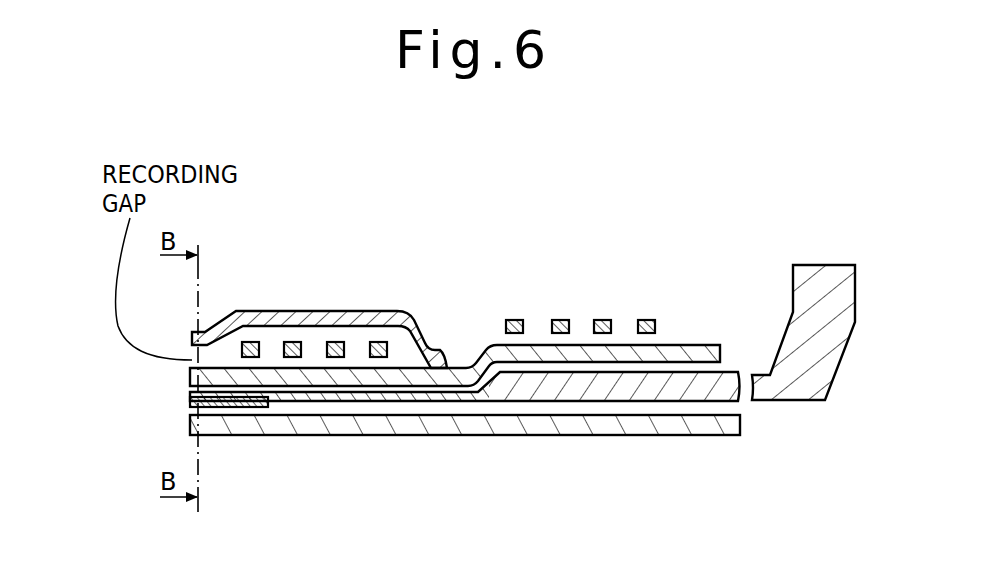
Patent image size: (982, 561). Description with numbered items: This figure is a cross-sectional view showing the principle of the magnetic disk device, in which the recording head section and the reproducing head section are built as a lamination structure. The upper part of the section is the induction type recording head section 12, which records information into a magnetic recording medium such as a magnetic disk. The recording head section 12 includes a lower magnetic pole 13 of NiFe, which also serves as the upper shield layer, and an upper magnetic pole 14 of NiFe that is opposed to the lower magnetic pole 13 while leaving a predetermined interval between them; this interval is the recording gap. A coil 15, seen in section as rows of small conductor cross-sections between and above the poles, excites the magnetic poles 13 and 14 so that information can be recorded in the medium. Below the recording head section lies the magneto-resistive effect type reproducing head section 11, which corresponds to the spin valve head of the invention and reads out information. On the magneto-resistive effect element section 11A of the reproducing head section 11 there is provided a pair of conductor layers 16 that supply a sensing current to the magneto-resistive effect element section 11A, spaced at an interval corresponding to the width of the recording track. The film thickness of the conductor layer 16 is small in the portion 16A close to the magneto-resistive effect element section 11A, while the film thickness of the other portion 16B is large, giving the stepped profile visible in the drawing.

The reproducing head section 11 is at (178, 407).
The magneto-resistive effect element section 11A is at (268, 408).
The recording head section 12 is at (180, 336).
The lower magnetic pole 13 is at (482, 345).
The upper magnetic pole 14 is at (295, 311).
The coil 15 is at (337, 342).
The conductor layers 16 is at (700, 393).
The thin portion of conductor layer 16A is at (352, 395).
The thick portion of conductor layer 16B is at (587, 390).